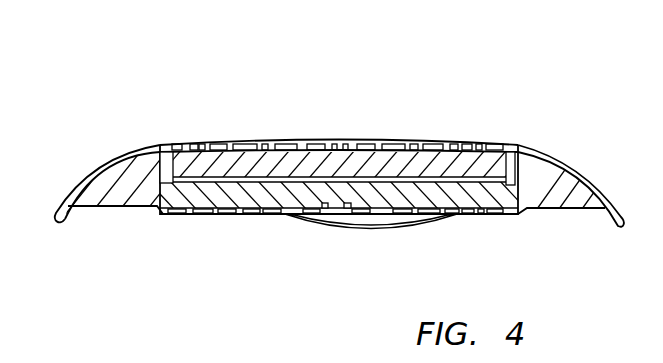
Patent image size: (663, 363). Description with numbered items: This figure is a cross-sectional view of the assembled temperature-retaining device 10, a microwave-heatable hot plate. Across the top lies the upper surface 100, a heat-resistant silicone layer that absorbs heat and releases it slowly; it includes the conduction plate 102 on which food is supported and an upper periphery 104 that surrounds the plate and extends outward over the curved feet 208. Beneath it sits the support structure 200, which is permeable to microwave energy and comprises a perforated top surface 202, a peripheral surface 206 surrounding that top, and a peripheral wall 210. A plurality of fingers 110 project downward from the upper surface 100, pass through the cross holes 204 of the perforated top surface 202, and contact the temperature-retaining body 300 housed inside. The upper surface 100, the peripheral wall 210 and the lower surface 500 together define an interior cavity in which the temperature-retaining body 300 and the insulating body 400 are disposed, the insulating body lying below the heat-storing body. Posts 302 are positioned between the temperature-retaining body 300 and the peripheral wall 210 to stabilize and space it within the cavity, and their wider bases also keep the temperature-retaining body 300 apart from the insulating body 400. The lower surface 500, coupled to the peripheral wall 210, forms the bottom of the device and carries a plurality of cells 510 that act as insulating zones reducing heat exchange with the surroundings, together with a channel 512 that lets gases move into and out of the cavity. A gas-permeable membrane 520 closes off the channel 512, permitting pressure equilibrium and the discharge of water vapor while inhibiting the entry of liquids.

The temperature-retaining device 10 is at (466, 78).
The upper surface 100 is at (158, 144).
The conduction plate 102 is at (375, 140).
The upper periphery 104 is at (73, 190).
The fingers 110 is at (300, 144).
The support structure 200 is at (583, 198).
The perforated top surface 202 is at (355, 140).
The cross holes 204 is at (210, 146).
The peripheral surface 206 is at (547, 168).
The feet 208 is at (110, 200).
The peripheral wall 210 is at (160, 190).
The temperature-retaining body 300 is at (222, 162).
The posts 302 is at (514, 156).
The insulating body 400 is at (498, 203).
The lower surface 500 is at (287, 213).
The cells 510 is at (247, 213).
The channel 512 is at (337, 214).
The gas-permeable membrane 520 is at (330, 214).